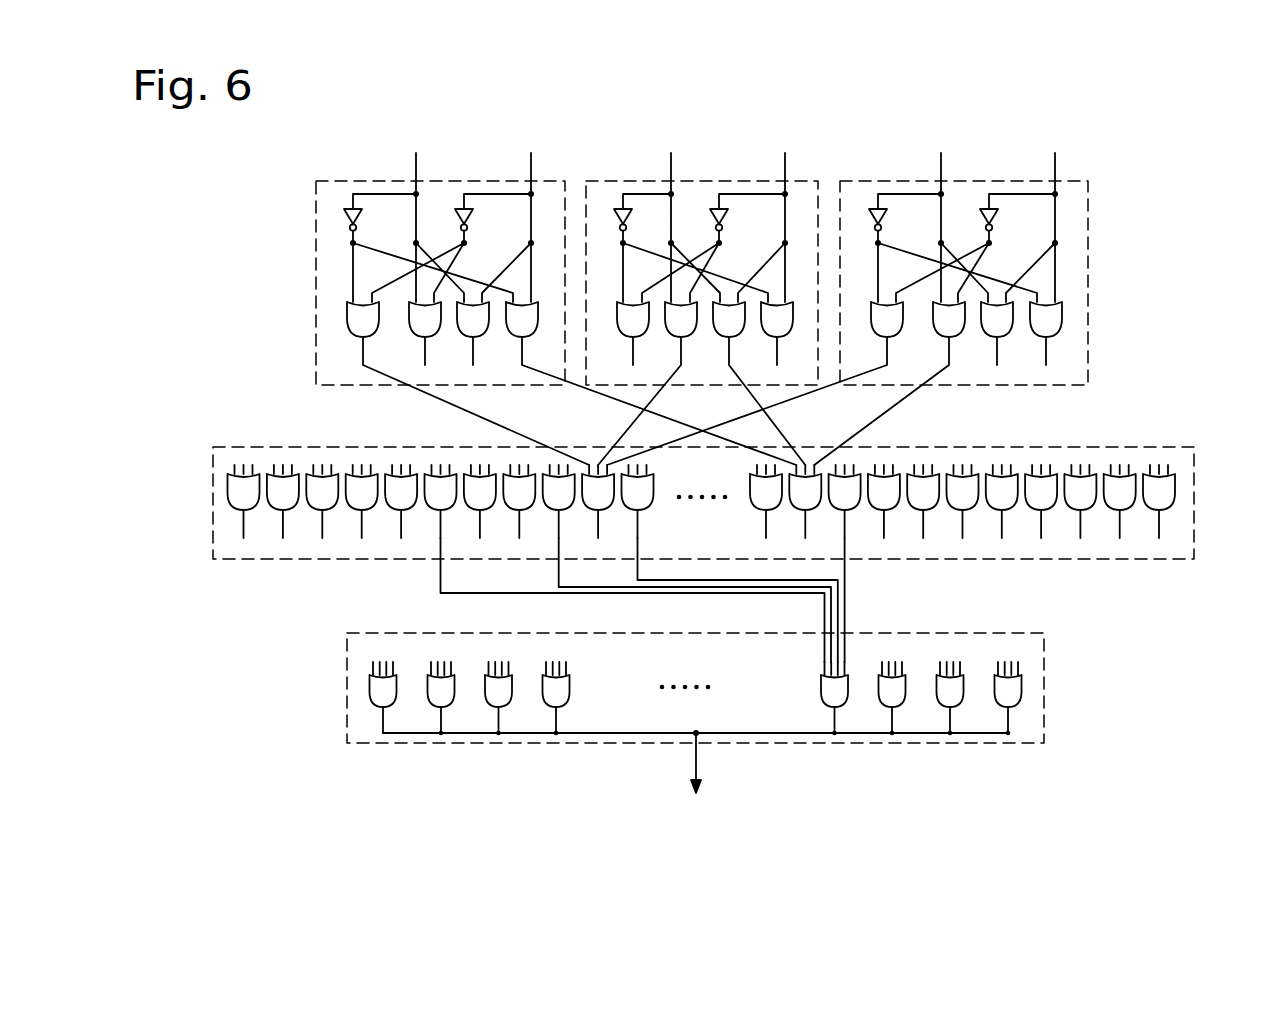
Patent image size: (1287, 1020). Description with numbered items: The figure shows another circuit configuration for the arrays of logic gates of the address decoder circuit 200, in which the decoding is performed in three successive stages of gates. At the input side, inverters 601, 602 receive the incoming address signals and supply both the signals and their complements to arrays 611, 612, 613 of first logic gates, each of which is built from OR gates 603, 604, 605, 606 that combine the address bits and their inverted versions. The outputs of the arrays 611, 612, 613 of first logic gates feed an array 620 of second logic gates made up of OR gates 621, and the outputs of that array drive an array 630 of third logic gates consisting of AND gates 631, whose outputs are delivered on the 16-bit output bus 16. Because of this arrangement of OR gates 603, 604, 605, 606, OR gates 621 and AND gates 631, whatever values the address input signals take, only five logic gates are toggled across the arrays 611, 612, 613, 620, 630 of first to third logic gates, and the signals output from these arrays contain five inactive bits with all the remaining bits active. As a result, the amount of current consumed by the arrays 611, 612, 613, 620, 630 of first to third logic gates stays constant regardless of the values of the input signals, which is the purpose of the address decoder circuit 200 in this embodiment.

The address decoder circuit 200 is at (1246, 124).
The array of first logic gates 613 is at (357, 181).
The array of first logic gates 612 is at (626, 181).
The array of first logic gates 611 is at (881, 181).
The inverter 602 is at (887, 220).
The inverter 601 is at (998, 220).
The OR gate 606 is at (898, 330).
The OR gate 605 is at (960, 330).
The OR gate 604 is at (1008, 330).
The OR gate 603 is at (1057, 330).
The array of second logic gates 620 is at (1195, 502).
The OR gate 621 is at (1173, 490).
The array of third logic gates 630 is at (1045, 693).
The AND gate 631 is at (1022, 685).
The 16-bit output bus 16 is at (690, 768).